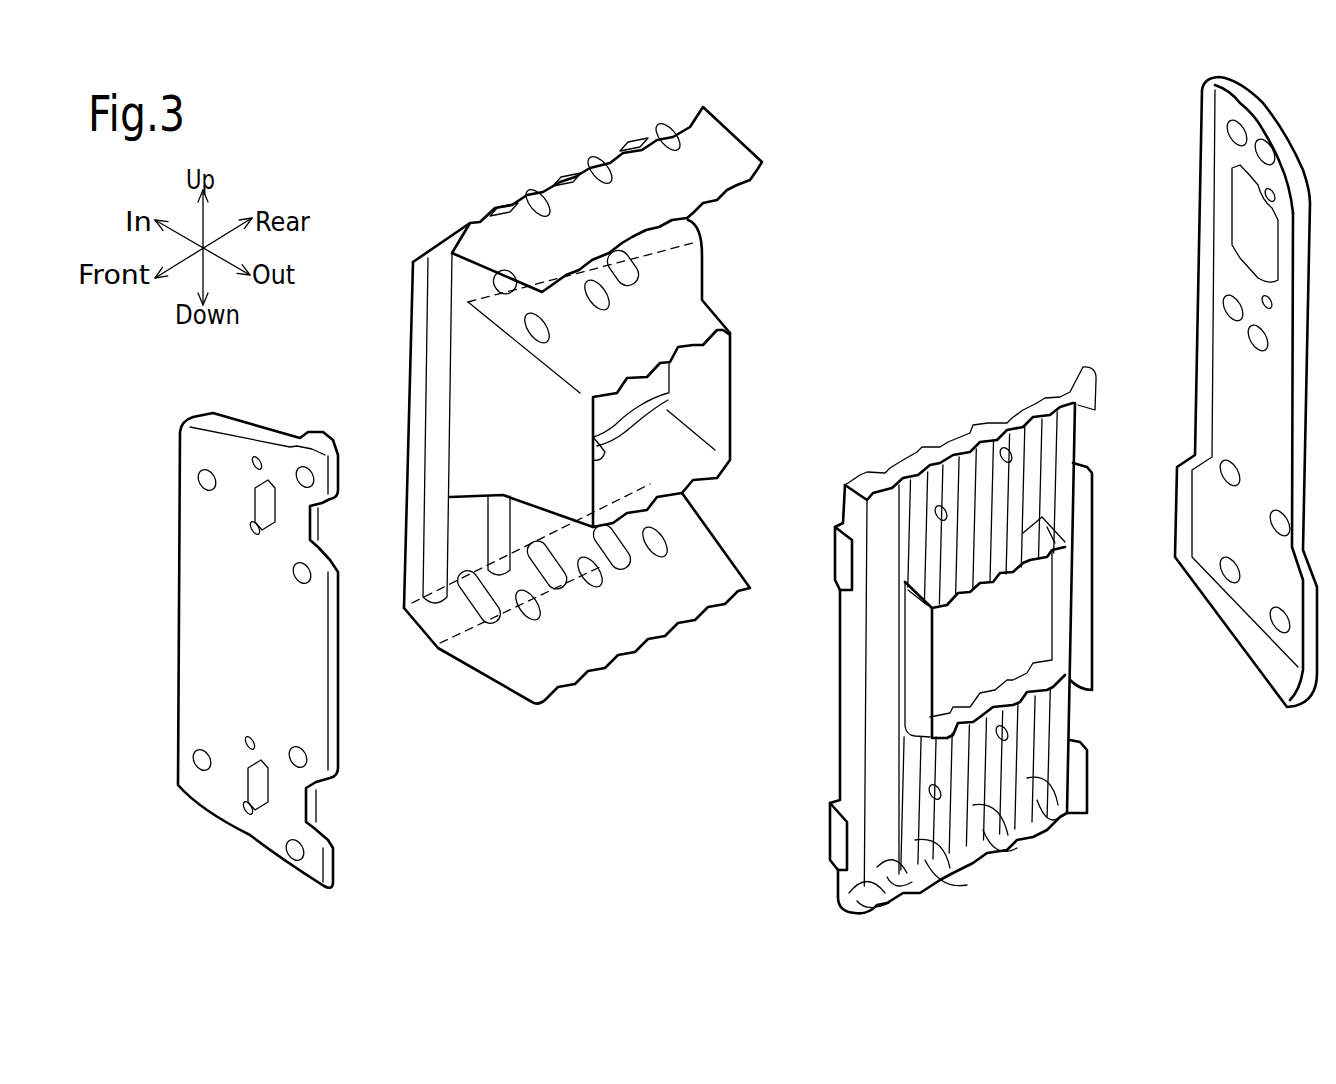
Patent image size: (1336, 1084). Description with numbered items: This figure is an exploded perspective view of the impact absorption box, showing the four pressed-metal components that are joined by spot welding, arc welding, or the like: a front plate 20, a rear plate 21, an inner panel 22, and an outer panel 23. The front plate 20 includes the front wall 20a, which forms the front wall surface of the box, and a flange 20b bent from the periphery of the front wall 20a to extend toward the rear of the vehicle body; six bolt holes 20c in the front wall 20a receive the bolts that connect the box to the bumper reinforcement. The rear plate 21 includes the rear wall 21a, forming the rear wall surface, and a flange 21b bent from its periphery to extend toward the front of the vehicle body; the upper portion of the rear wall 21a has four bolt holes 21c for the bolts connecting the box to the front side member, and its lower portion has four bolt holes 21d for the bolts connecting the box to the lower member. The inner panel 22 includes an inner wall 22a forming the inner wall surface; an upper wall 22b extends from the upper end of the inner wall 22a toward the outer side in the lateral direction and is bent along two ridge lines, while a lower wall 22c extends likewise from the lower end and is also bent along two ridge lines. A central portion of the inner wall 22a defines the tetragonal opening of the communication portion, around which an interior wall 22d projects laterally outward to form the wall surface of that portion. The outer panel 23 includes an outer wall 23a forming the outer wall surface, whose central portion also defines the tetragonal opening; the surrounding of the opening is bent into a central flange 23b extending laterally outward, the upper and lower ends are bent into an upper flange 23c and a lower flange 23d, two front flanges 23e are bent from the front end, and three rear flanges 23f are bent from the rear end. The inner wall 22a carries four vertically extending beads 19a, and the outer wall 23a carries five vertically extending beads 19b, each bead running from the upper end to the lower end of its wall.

The beads 19a is at (610, 152).
The beads 19b is at (1050, 838).
The front plate 20 is at (313, 403).
The front wall 20a is at (213, 653).
The flange 20b is at (253, 425).
The bolt holes 20c is at (313, 480).
The rear plate 21 is at (1189, 123).
The rear wall 21a is at (1220, 415).
The flange 21b is at (1278, 150).
The bolt holes 21c is at (1255, 170).
The bolt holes 21d is at (1277, 515).
The inner panel 22 is at (439, 200).
The inner wall 22a is at (447, 550).
The upper wall 22b is at (555, 183).
The lower wall 22c is at (688, 578).
The interior wall 22d is at (673, 258).
The outer panel 23 is at (894, 430).
The outer wall 23a is at (1057, 703).
The central flange 23b is at (997, 695).
The upper flange 23c is at (998, 418).
The lower flange 23d is at (857, 905).
The front flanges 23e is at (838, 563).
The rear flanges 23f is at (1085, 403).